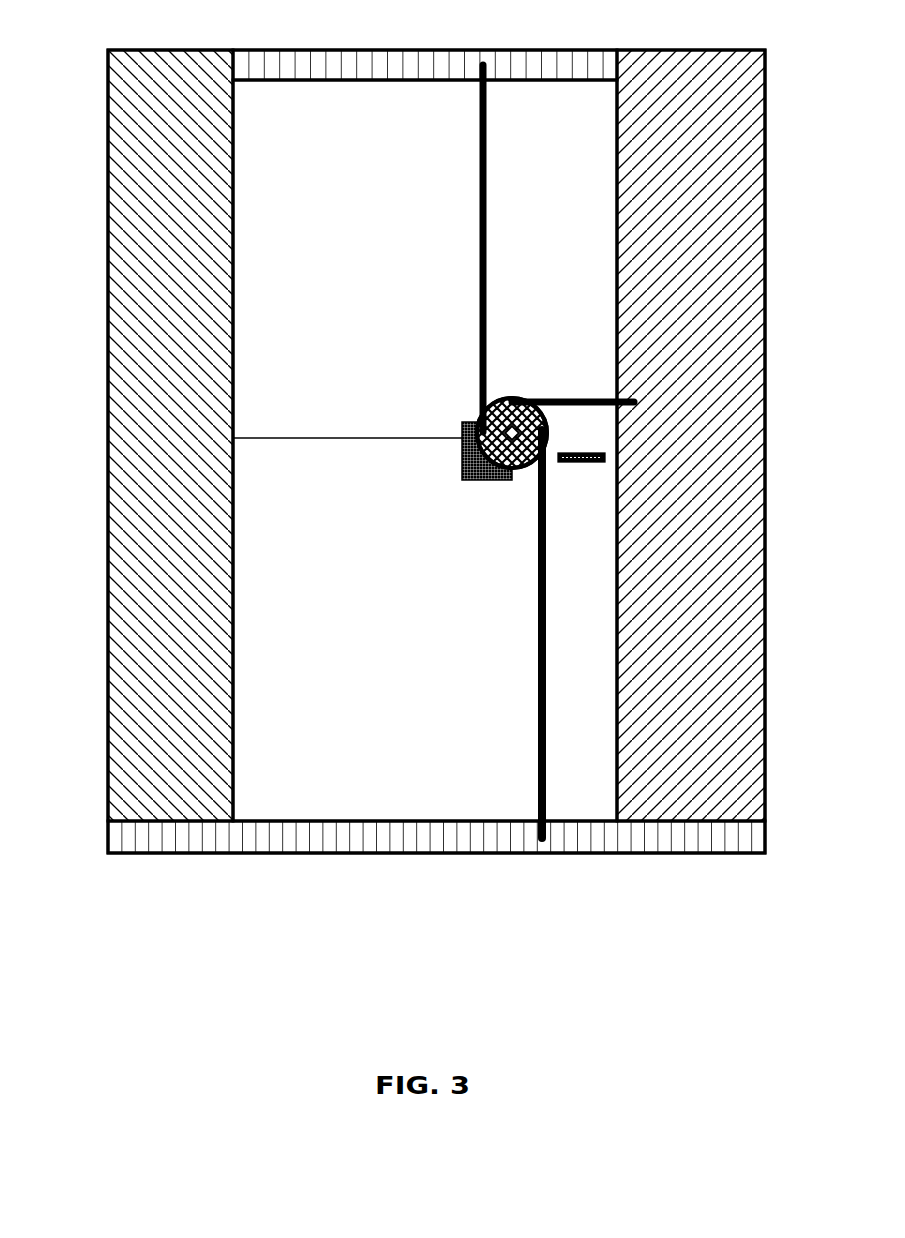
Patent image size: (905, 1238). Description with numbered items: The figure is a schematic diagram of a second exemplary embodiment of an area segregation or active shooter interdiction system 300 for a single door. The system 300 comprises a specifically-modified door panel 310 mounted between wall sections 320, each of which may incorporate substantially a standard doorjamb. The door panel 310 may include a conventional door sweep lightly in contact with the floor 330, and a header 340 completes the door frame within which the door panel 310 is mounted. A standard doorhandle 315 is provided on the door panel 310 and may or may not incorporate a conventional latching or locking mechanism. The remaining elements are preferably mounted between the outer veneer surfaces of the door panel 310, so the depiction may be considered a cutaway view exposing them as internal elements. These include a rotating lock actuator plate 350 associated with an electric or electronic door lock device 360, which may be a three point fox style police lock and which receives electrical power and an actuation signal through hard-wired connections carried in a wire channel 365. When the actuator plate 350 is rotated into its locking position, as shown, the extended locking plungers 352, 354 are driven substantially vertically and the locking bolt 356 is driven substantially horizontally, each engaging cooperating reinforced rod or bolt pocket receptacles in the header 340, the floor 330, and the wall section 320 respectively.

The system 300 is at (78, 30).
The specifically-modified door panel 310 is at (425, 450).
The standard doorhandle 315 is at (580, 477).
The wall sections 320 is at (436, 435).
The floor 330 is at (377, 837).
The header 340 is at (378, 67).
The rotating lock actuator plate 350 is at (478, 418).
The extended locking plunger 352 is at (480, 260).
The extended locking plunger 354 is at (538, 620).
The locking bolt 356 is at (570, 398).
The electric door lock device 360 is at (462, 480).
The wire channel 365 is at (333, 440).